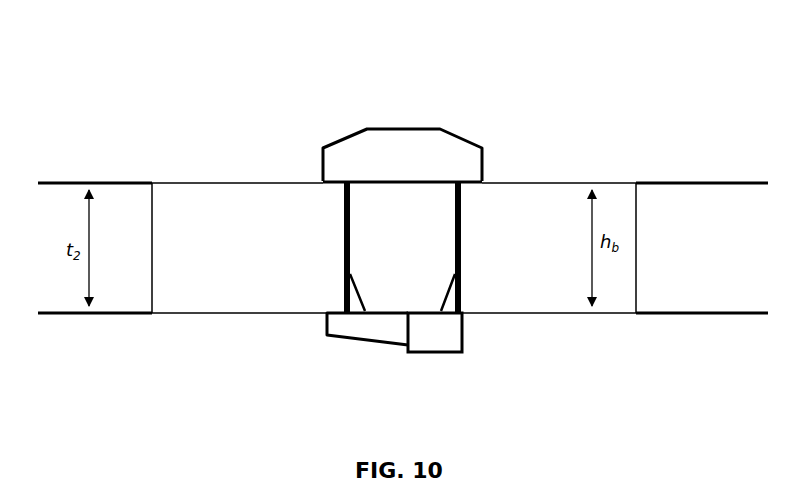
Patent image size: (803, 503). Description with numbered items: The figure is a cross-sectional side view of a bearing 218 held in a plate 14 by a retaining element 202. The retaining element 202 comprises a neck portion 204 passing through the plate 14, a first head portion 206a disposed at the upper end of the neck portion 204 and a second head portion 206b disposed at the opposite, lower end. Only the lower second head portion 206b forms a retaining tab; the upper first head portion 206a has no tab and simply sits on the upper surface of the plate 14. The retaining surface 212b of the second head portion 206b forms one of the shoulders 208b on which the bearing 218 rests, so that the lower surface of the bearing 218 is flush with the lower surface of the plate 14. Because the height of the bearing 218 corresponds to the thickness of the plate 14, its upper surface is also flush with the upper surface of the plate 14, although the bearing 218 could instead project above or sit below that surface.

The plate 14 is at (76, 200).
The bearing 218 is at (205, 198).
The retaining element 202 is at (441, 103).
The first head portion 206a is at (455, 160).
The neck portion 204 is at (384, 252).
The retaining surface 212b is at (448, 310).
The second head portion 206b is at (374, 330).
The shoulder 208b is at (440, 334).